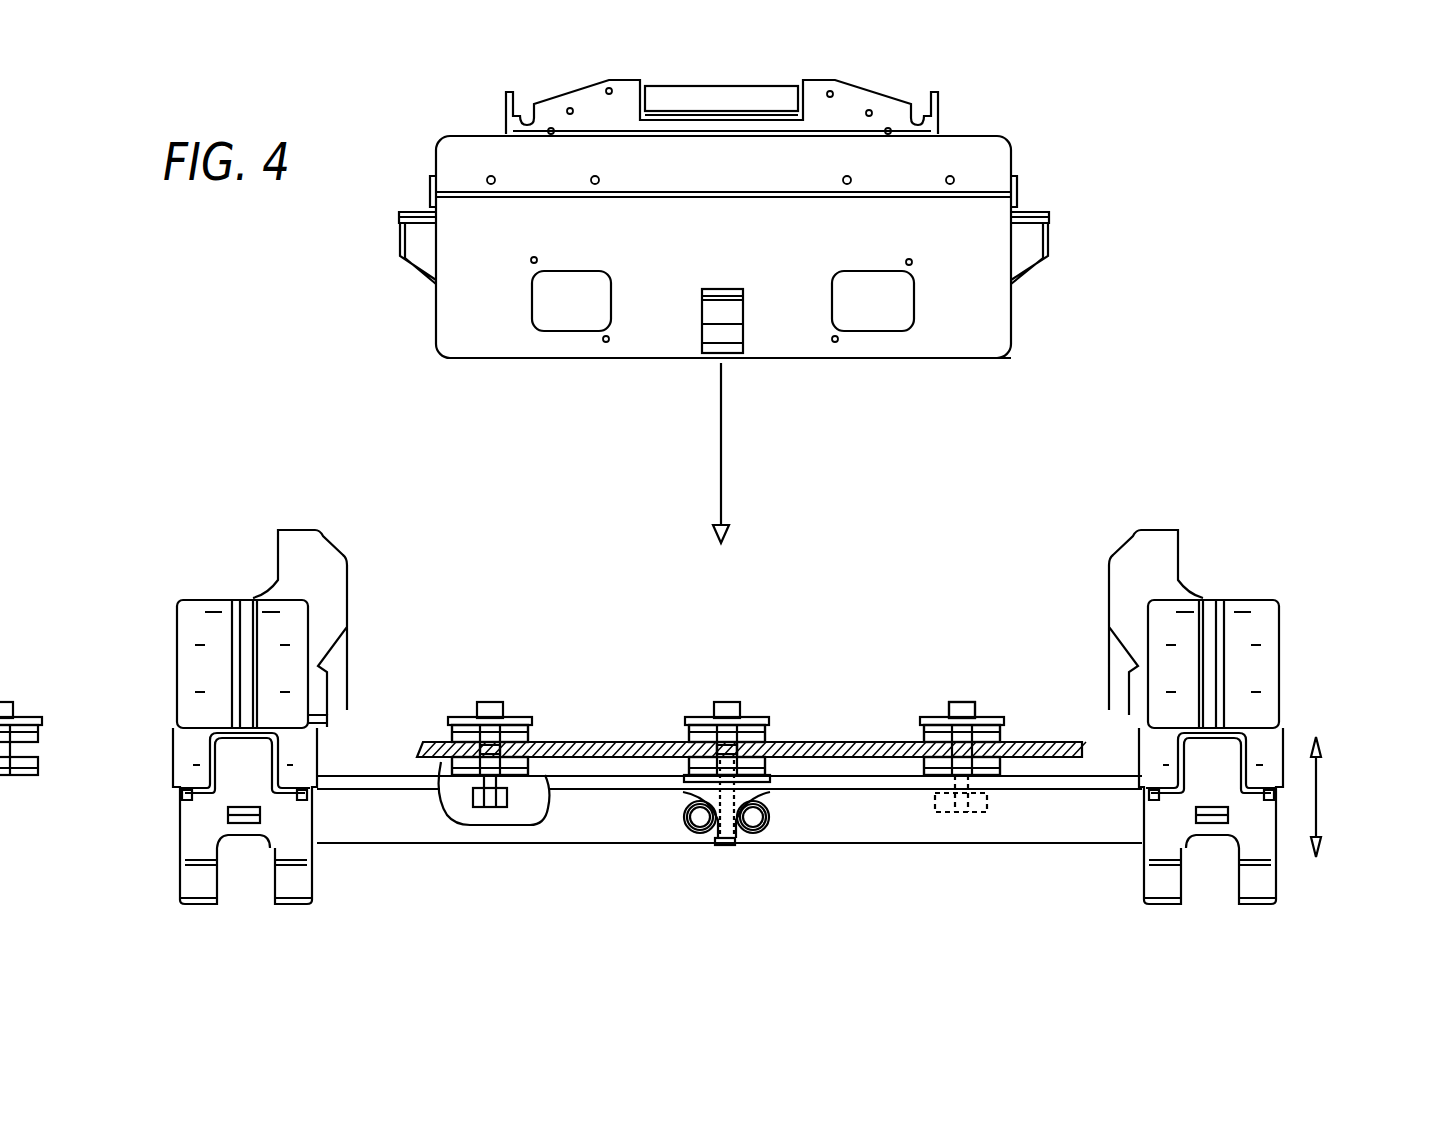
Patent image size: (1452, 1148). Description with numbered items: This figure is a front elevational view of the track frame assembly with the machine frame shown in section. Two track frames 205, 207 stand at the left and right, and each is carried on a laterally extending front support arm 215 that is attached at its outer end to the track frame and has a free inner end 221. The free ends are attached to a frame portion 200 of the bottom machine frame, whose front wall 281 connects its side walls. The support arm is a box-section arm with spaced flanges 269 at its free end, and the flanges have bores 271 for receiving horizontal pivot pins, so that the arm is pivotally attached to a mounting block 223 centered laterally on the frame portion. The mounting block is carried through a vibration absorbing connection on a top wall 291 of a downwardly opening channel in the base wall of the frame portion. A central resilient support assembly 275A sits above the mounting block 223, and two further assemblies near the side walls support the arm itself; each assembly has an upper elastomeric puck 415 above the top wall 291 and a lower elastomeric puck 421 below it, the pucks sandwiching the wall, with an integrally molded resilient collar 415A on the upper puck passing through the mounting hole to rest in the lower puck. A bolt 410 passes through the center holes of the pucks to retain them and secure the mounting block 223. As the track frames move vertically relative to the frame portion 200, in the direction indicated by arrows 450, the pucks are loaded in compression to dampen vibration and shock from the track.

The frame portion 200 is at (997, 310).
The front wall 281 is at (933, 342).
The track frame 205 is at (210, 612).
The track frame 207 is at (1258, 710).
The front support arm 215 is at (490, 832).
The top wall 291 is at (893, 742).
The central resilient support assembly 275A is at (723, 690).
The bolt 410 is at (960, 703).
The upper elastomeric puck 415 is at (450, 737).
The resilient collar 415A is at (527, 750).
The lower elastomeric puck 421 is at (767, 752).
The mounting block 223 is at (722, 748).
The free end 221 is at (777, 810).
The flange 269 is at (693, 838).
The bore 271 is at (752, 825).
The arrows 450 is at (1317, 788).